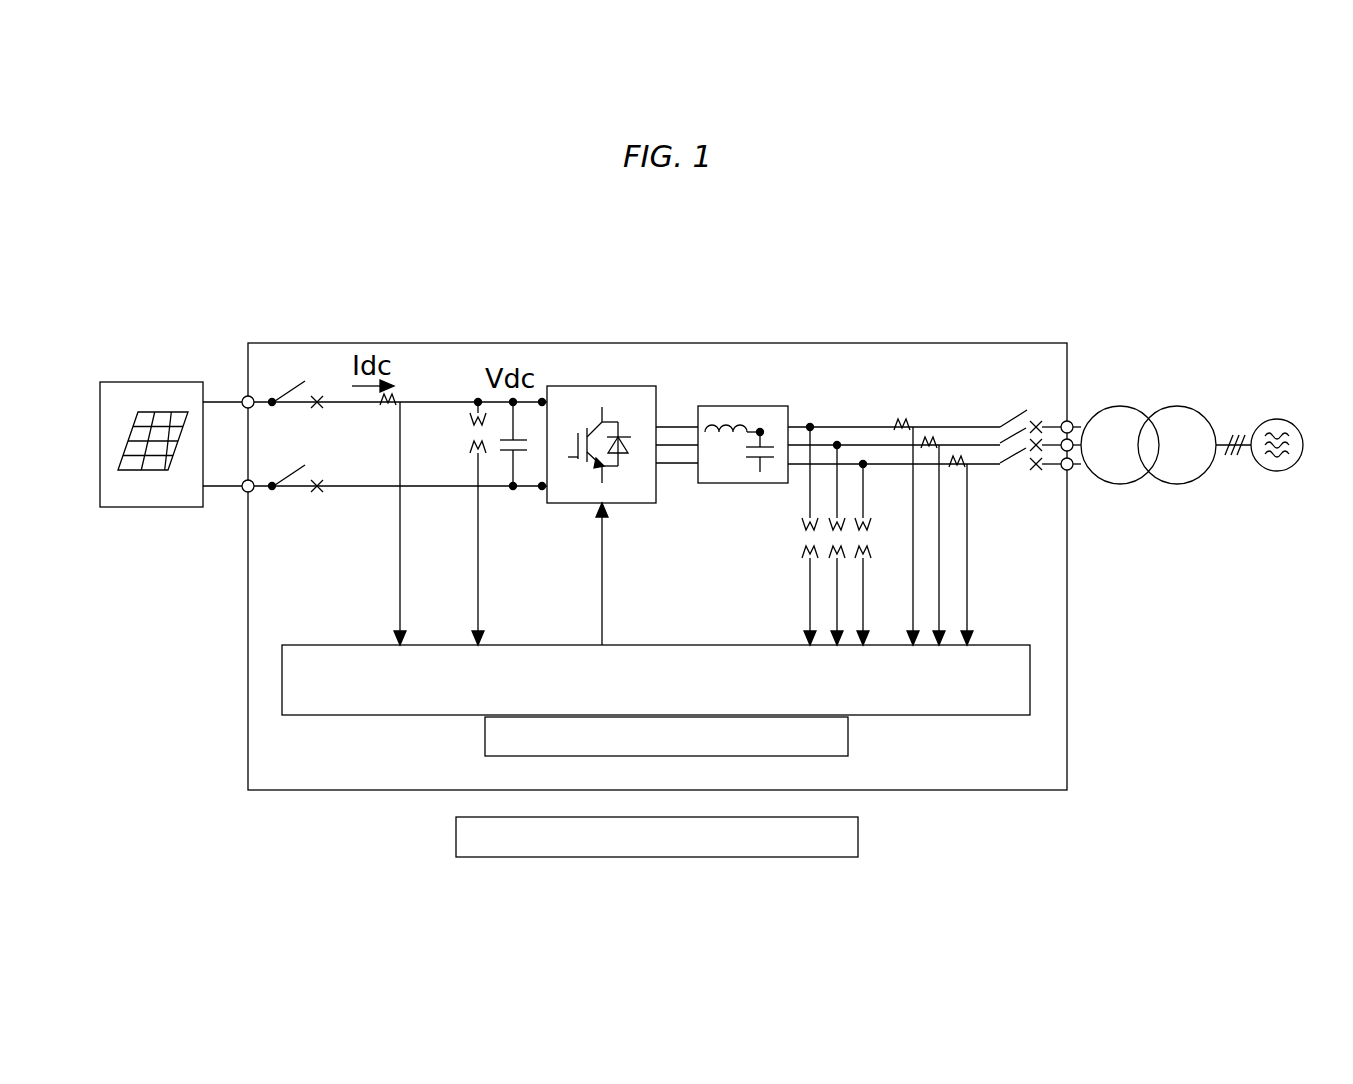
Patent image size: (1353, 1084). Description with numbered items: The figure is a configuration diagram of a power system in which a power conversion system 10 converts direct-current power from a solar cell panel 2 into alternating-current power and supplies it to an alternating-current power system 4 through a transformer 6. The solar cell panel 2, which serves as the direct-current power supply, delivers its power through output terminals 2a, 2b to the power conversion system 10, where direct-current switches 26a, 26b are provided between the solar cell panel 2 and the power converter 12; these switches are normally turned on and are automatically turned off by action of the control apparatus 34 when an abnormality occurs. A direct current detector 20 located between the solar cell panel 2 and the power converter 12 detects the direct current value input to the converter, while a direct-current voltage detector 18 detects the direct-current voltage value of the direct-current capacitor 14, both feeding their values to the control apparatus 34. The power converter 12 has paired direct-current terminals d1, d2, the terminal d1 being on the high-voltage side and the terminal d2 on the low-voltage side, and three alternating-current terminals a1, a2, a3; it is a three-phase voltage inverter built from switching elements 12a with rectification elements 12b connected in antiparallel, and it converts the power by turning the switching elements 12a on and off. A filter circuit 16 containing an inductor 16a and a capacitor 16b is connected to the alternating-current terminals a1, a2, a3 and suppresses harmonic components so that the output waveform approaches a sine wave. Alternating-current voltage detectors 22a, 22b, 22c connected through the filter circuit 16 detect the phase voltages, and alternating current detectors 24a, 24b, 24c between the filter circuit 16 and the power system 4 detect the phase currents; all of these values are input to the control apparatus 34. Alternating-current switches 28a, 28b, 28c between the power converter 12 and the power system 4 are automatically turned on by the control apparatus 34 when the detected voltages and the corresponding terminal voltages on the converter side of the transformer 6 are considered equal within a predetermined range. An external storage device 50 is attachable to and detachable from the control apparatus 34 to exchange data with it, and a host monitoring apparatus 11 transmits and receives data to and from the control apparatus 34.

The solar cell panel 2 is at (140, 380).
The output terminal 2a is at (206, 398).
The output terminal 2b is at (208, 490).
The power conversion system 10 is at (1052, 333).
The direct-current switch 26a is at (291, 390).
The direct-current switch 26b is at (292, 478).
The direct current detector 20 is at (398, 396).
The direct-current voltage detector 18 is at (472, 423).
The direct-current capacitor 14 is at (505, 455).
The direct-current terminal d1 is at (543, 398).
The direct-current terminal d2 is at (543, 490).
The power converter 12 is at (612, 384).
The switching element 12a is at (590, 423).
The rectification element 12b is at (624, 432).
The alternating-current terminal a1 is at (670, 425).
The alternating-current terminal a2 is at (663, 447).
The alternating-current terminal a3 is at (660, 466).
The filter circuit 16 is at (763, 405).
The inductor 16a is at (716, 428).
The capacitor 16b is at (770, 445).
The alternating-current voltage detector 22a is at (805, 530).
The alternating-current voltage detector 22b is at (833, 548).
The alternating-current voltage detector 22c is at (860, 548).
The alternating current detector 24a is at (897, 420).
The alternating current detector 24b is at (928, 437).
The alternating current detector 24c is at (956, 457).
The alternating-current switch 28a is at (1010, 416).
The alternating-current switch 28b is at (1003, 441).
The alternating-current switch 28c is at (1013, 456).
The transformer 6 is at (1180, 406).
The power system 4 is at (1278, 419).
The control apparatus 34 is at (1032, 672).
The external storage device 50 is at (850, 740).
The host monitoring apparatus 11 is at (860, 838).